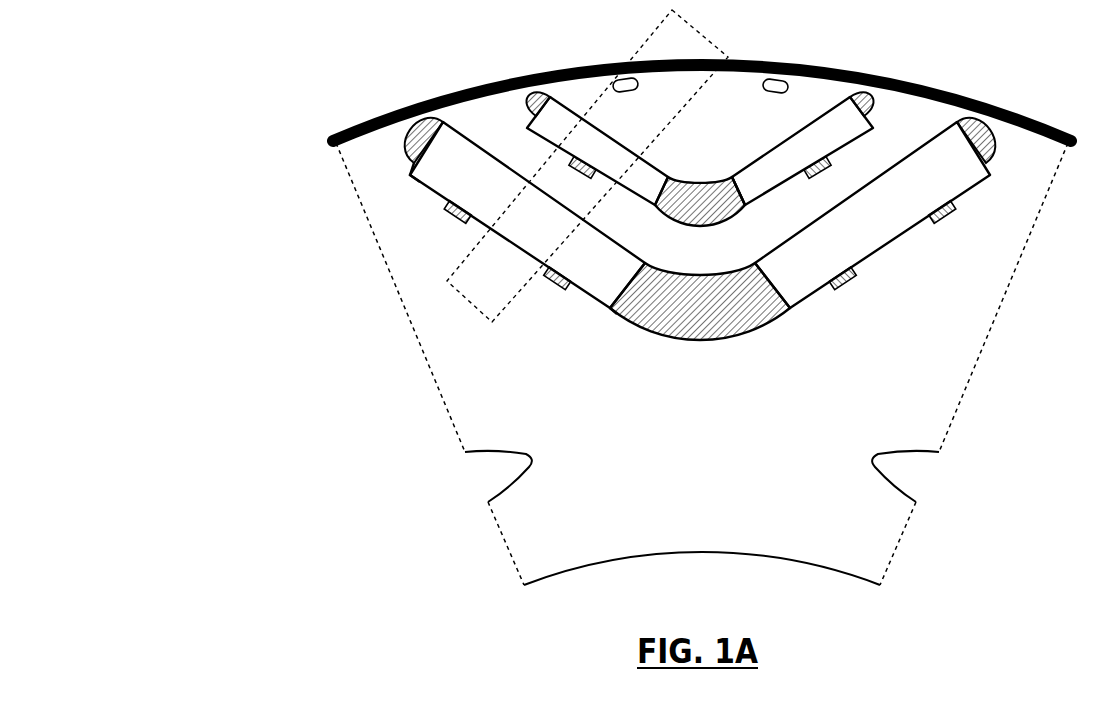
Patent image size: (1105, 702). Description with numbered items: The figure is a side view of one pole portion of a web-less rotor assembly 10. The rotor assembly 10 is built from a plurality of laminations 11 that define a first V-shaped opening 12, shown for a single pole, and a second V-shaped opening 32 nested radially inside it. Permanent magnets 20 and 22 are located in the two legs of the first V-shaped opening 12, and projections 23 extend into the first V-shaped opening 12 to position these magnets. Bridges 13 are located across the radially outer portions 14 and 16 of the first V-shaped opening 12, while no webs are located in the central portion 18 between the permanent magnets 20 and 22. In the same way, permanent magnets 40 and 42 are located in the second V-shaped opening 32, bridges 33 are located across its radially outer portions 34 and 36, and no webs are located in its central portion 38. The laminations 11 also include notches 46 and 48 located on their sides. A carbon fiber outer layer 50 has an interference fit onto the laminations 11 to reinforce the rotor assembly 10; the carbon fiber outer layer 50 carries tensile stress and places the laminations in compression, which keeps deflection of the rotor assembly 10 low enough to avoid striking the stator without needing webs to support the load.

The rotor assembly 10 is at (244, 49).
The laminations 11 is at (388, 233).
The first V-shaped opening 12 is at (704, 245).
The bridges 13 is at (402, 124).
The radially outer portion 14 is at (402, 147).
The radially outer portion 16 is at (1006, 150).
The central portion 18 is at (710, 323).
The permanent magnet 20 is at (542, 240).
The permanent magnet 22 is at (883, 238).
The projections 23 is at (413, 168).
The second V-shaped opening 32 is at (730, 217).
The bridges 33 is at (505, 88).
The radially outer portion 34 is at (520, 108).
The radially outer portion 36 is at (886, 110).
The central portion 38 is at (703, 215).
The permanent magnet 40 is at (603, 145).
The permanent magnet 42 is at (803, 152).
The notch 46 is at (470, 481).
The notch 48 is at (924, 479).
The carbon fiber outer layer 50 is at (943, 90).